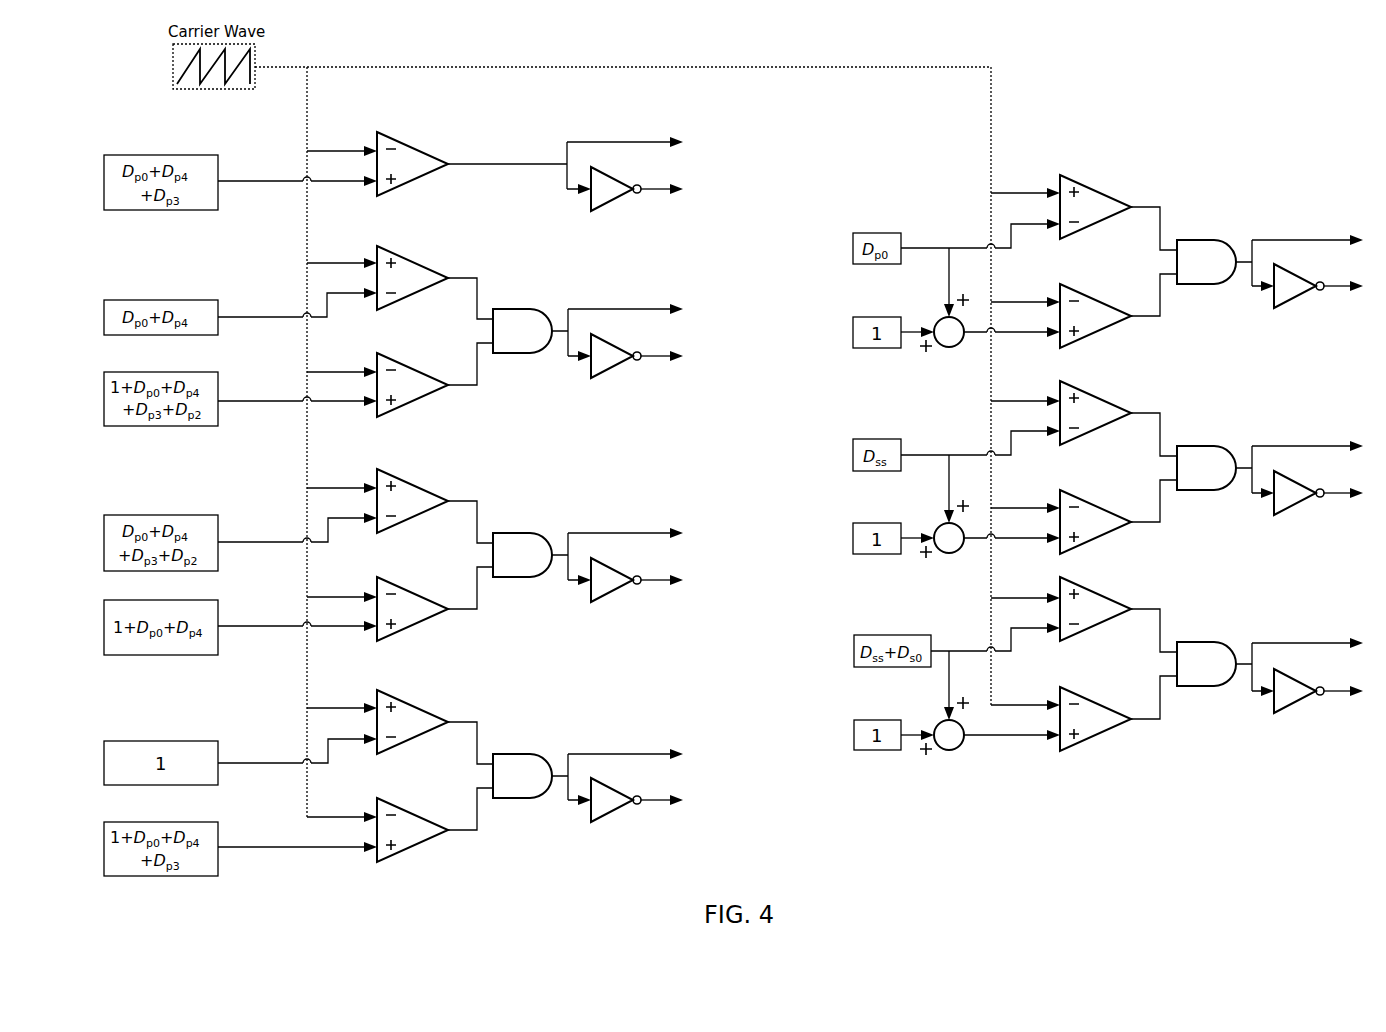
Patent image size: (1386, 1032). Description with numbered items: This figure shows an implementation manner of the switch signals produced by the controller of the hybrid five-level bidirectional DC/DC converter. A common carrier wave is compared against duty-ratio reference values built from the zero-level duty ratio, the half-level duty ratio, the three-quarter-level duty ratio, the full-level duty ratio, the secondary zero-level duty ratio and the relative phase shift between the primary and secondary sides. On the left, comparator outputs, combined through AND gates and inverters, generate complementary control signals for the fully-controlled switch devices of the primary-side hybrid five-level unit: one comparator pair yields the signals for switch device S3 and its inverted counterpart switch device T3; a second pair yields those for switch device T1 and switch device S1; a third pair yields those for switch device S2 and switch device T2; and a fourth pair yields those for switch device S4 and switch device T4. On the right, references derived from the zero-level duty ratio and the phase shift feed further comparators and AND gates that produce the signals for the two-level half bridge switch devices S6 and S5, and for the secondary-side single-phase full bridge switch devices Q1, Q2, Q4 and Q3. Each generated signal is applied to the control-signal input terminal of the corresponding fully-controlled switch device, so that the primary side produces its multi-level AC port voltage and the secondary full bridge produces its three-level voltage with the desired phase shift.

The fully-controlled switch device S3 is at (625, 132).
The fully-controlled switch device T3 is at (637, 188).
The fully-controlled switch device T1 is at (625, 299).
The fully-controlled switch device S1 is at (637, 355).
The fully-controlled switch device S2 is at (625, 523).
The fully-controlled switch device T2 is at (637, 579).
The fully-controlled switch device S4 is at (625, 744).
The fully-controlled switch device T4 is at (637, 799).
The fully-controlled switch device S6 is at (1307, 230).
The fully-controlled switch device S5 is at (1318, 285).
The fully-controlled switch device Q1 is at (1307, 436).
The fully-controlled switch device Q2 is at (1318, 492).
The fully-controlled switch device Q4 is at (1307, 633).
The fully-controlled switch device Q3 is at (1318, 689).